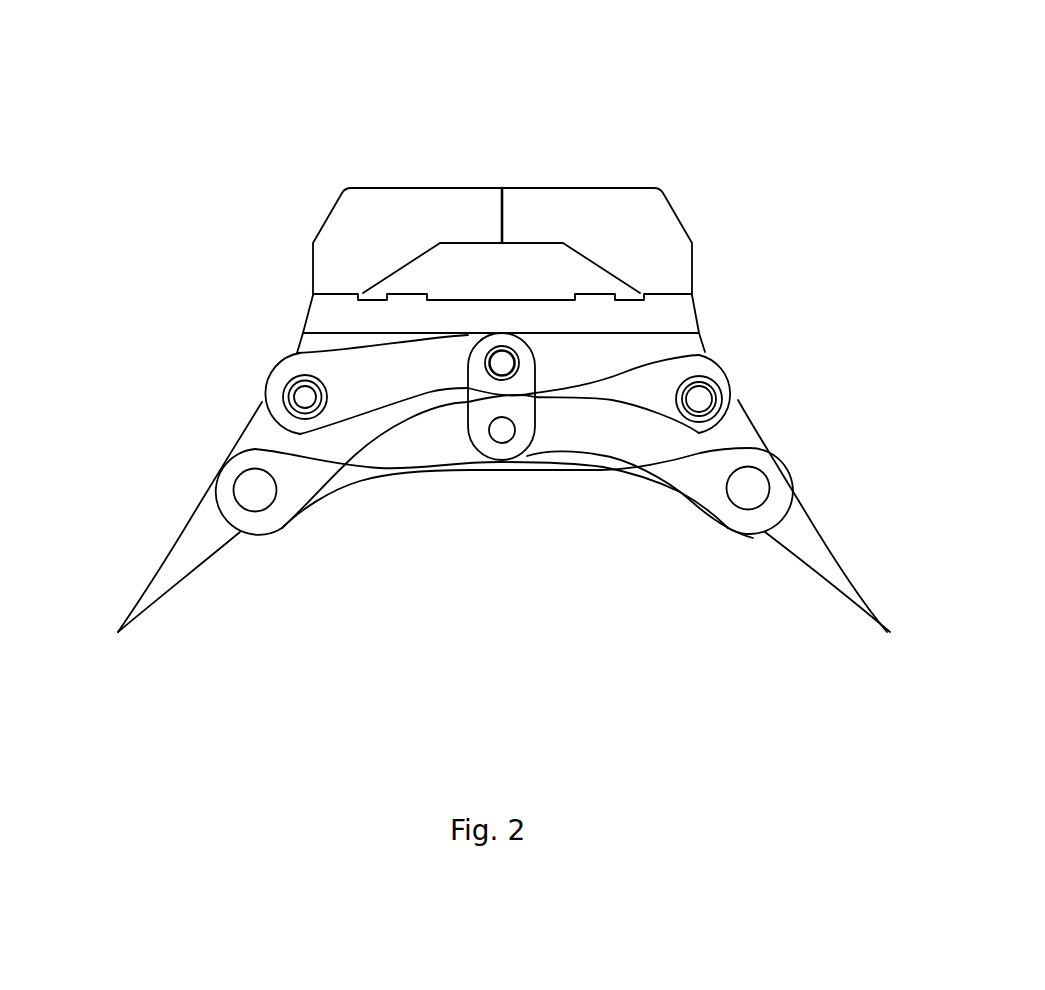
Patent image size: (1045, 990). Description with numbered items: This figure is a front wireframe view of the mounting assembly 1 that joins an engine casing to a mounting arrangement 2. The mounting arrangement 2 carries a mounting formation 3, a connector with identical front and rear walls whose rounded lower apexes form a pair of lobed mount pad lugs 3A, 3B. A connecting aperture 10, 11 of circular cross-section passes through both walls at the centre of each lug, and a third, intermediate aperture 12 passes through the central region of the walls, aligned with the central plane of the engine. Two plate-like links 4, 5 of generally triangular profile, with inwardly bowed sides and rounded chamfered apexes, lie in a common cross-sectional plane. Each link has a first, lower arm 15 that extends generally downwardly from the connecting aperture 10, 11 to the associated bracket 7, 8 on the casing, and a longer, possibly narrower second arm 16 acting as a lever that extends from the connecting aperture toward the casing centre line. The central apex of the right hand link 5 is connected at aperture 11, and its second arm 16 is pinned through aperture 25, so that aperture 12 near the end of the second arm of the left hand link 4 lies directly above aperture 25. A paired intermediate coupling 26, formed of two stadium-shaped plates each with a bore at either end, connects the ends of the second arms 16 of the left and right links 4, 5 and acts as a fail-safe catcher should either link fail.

The clamping device 1 is at (739, 83).
The mounting arrangement 2 is at (350, 222).
The mounting formation 3 is at (567, 350).
The mount pad lug 3A is at (693, 363).
The mount pad lug 3B is at (275, 352).
The link 4 is at (258, 410).
The link 5 is at (745, 413).
The connecting lug 7 is at (193, 542).
The connecting lug 8 is at (810, 543).
The connecting aperture 10 is at (303, 393).
The connecting aperture 11 is at (699, 399).
The intermediate aperture 12 is at (502, 363).
The first arm 15 is at (263, 435).
The second arm 16 is at (410, 367).
The aperture 25 is at (502, 432).
The connecting coupling 26 is at (525, 358).